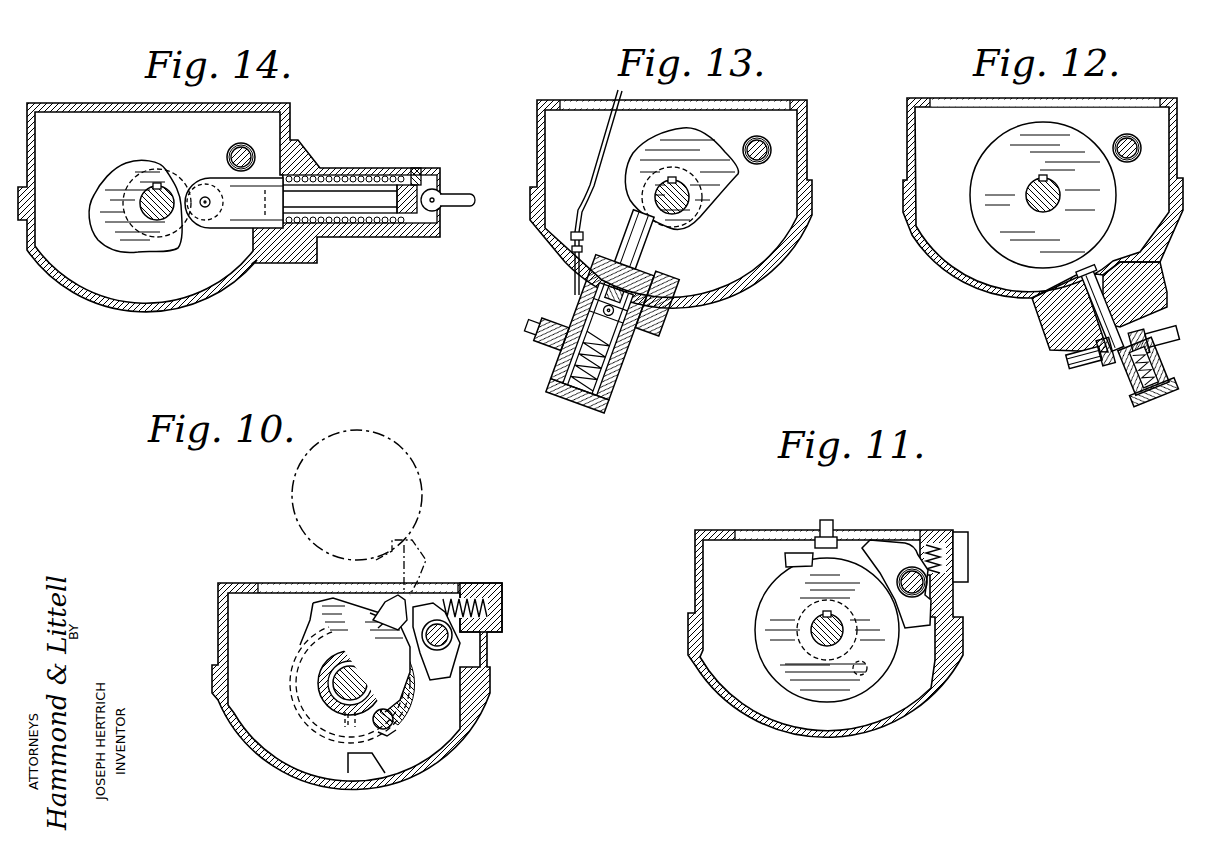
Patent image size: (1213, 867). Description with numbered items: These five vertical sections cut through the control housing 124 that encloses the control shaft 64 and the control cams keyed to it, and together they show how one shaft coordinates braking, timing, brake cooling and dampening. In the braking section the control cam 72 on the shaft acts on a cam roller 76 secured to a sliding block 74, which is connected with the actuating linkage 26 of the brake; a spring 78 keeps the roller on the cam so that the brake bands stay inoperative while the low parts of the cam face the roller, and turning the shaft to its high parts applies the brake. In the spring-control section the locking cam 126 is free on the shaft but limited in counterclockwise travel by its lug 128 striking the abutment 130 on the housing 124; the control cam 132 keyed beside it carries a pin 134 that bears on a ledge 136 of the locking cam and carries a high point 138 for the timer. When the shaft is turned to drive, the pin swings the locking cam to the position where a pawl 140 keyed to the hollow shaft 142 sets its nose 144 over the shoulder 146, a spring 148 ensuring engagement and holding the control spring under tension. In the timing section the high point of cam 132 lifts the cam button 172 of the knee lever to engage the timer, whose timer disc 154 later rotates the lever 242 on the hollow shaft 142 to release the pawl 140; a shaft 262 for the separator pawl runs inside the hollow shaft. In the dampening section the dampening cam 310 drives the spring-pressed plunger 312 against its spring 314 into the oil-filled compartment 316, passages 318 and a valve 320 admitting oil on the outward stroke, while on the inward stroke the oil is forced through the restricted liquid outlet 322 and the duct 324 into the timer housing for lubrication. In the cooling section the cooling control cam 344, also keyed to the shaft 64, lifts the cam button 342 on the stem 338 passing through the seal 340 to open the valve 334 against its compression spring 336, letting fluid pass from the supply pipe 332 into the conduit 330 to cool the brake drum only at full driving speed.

In FIG. 14, the actuating linkage 26 is at (460, 195).
In FIG. 14, the control shaft 64 is at (150, 197).
In FIG. 13, the control shaft 64 is at (684, 207).
In FIG. 12, the control shaft 64 is at (1027, 193).
In FIG. 10, the control shaft 64 is at (350, 683).
In FIG. 11, the control shaft 64 is at (827, 628).
In FIG. 14, the control cam 72 is at (130, 245).
In FIG. 14, the sliding block 74 is at (356, 205).
In FIG. 14, the cam roller 76 is at (196, 182).
In FIG. 14, the spring 78 is at (366, 176).
In FIG. 14, the housing 124 is at (176, 312).
In FIG. 13, the housing 124 is at (770, 266).
In FIG. 12, the housing 124 is at (951, 275).
In FIG. 10, the housing 124 is at (480, 725).
In FIG. 11, the housing 124 is at (858, 740).
In FIG. 10, the locking cam 126 is at (300, 660).
In FIG. 10, the lug 128 is at (313, 621).
In FIG. 10, the abutment 130 is at (368, 765).
In FIG. 11, the control cam 132 is at (782, 674).
In FIG. 10, the pin 134 is at (395, 721).
In FIG. 11, the pin 134 is at (866, 673).
In FIG. 10, the ledge 136 is at (388, 733).
In FIG. 11, the high point 138 is at (800, 552).
In FIG. 10, the pawl 140 is at (446, 607).
In FIG. 11, the pawl 140 is at (900, 548).
In FIG. 14, the hollow shaft 142 is at (253, 150).
In FIG. 13, the hollow shaft 142 is at (772, 146).
In FIG. 12, the hollow shaft 142 is at (1135, 137).
In FIG. 10, the hollow shaft 142 is at (455, 641).
In FIG. 11, the hollow shaft 142 is at (925, 583).
In FIG. 10, the nose 144 is at (392, 610).
In FIG. 10, the shoulder 146 is at (376, 621).
In FIG. 10, the spring 148 is at (495, 585).
In FIG. 11, the spring 148 is at (946, 540).
In FIG. 10, the timer disc 154 is at (418, 466).
In FIG. 11, the cam button 172 is at (822, 521).
In FIG. 10, the lever 242 is at (428, 562).
In FIG. 14, the shaft 262 is at (241, 147).
In FIG. 13, the shaft 262 is at (749, 144).
In FIG. 12, the shaft 262 is at (1117, 140).
In FIG. 11, the shaft 262 is at (924, 593).
In FIG. 13, the dampening cam 310 is at (648, 158).
In FIG. 13, the spring-pressed plunger 312 is at (655, 250).
In FIG. 13, the spring 314 is at (606, 400).
In FIG. 13, the compartment 316 is at (636, 362).
In FIG. 13, the passages 318 is at (668, 312).
In FIG. 13, the valve 320 is at (645, 335).
In FIG. 13, the restricted liquid outlet 322 is at (552, 345).
In FIG. 13, the duct 324 is at (580, 172).
In FIG. 12, the conduit 330 is at (1072, 370).
In FIG. 12, the supply pipe 332 is at (1173, 331).
In FIG. 12, the valve 334 is at (1120, 378).
In FIG. 12, the compression spring 336 is at (1130, 400).
In FIG. 12, the stem 338 is at (1097, 366).
In FIG. 12, the seal 340 is at (1040, 322).
In FIG. 12, the cam button 342 is at (1095, 264).
In FIG. 12, the cooling control cam 344 is at (1043, 195).